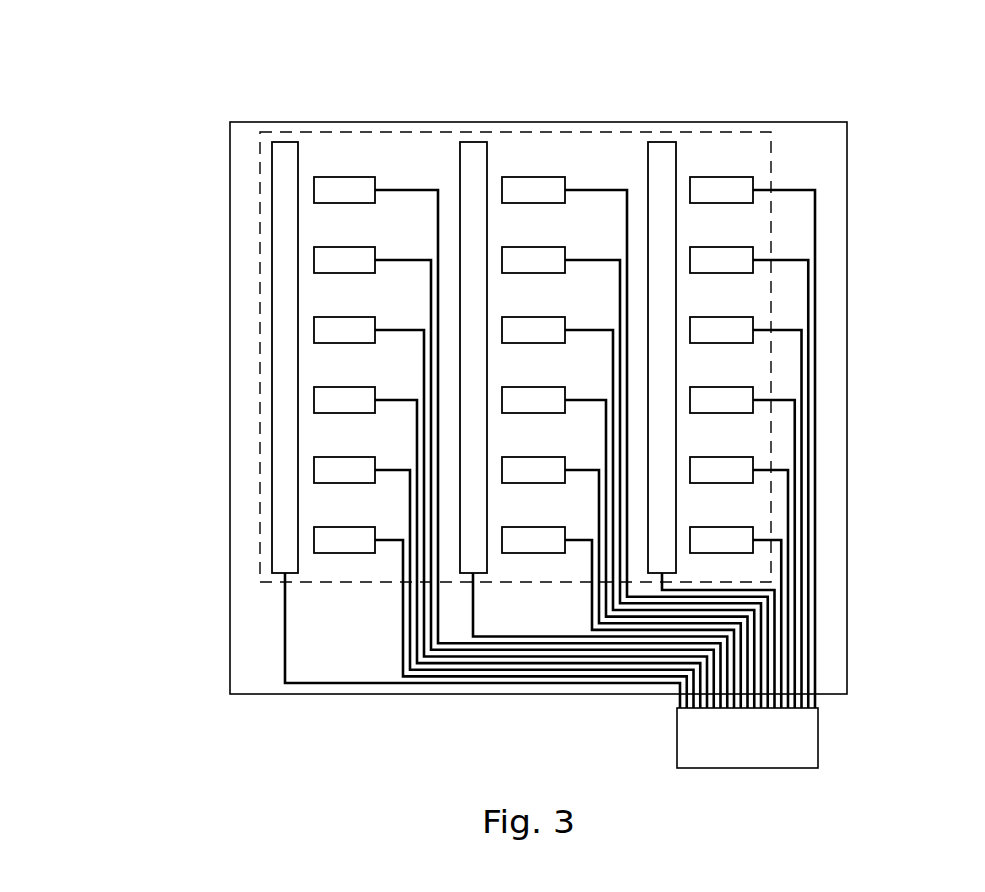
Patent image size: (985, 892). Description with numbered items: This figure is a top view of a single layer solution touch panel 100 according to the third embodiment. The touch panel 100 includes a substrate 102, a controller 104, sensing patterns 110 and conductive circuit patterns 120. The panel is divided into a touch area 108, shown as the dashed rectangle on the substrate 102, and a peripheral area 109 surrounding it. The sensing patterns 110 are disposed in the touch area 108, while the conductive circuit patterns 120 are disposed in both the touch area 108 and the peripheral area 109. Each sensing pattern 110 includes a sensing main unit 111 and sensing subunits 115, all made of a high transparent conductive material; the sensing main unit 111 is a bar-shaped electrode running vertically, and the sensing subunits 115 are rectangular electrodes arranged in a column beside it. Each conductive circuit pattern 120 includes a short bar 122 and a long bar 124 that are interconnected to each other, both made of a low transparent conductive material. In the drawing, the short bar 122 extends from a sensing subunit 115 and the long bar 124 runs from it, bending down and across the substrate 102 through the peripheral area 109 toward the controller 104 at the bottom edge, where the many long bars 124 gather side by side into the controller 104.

The single layer solution touch panel 100 is at (70, 48).
The substrate 102 is at (248, 133).
The controller 104 is at (812, 738).
The touch area 108 is at (431, 171).
The peripheral area 109 is at (827, 523).
The sensing pattern 110 is at (350, 70).
The sensing main unit 111 is at (284, 140).
The sensing subunit 115 is at (348, 177).
The conductive circuit pattern 120 is at (638, 70).
The short bar 122 is at (588, 187).
The long bar 124 is at (635, 187).